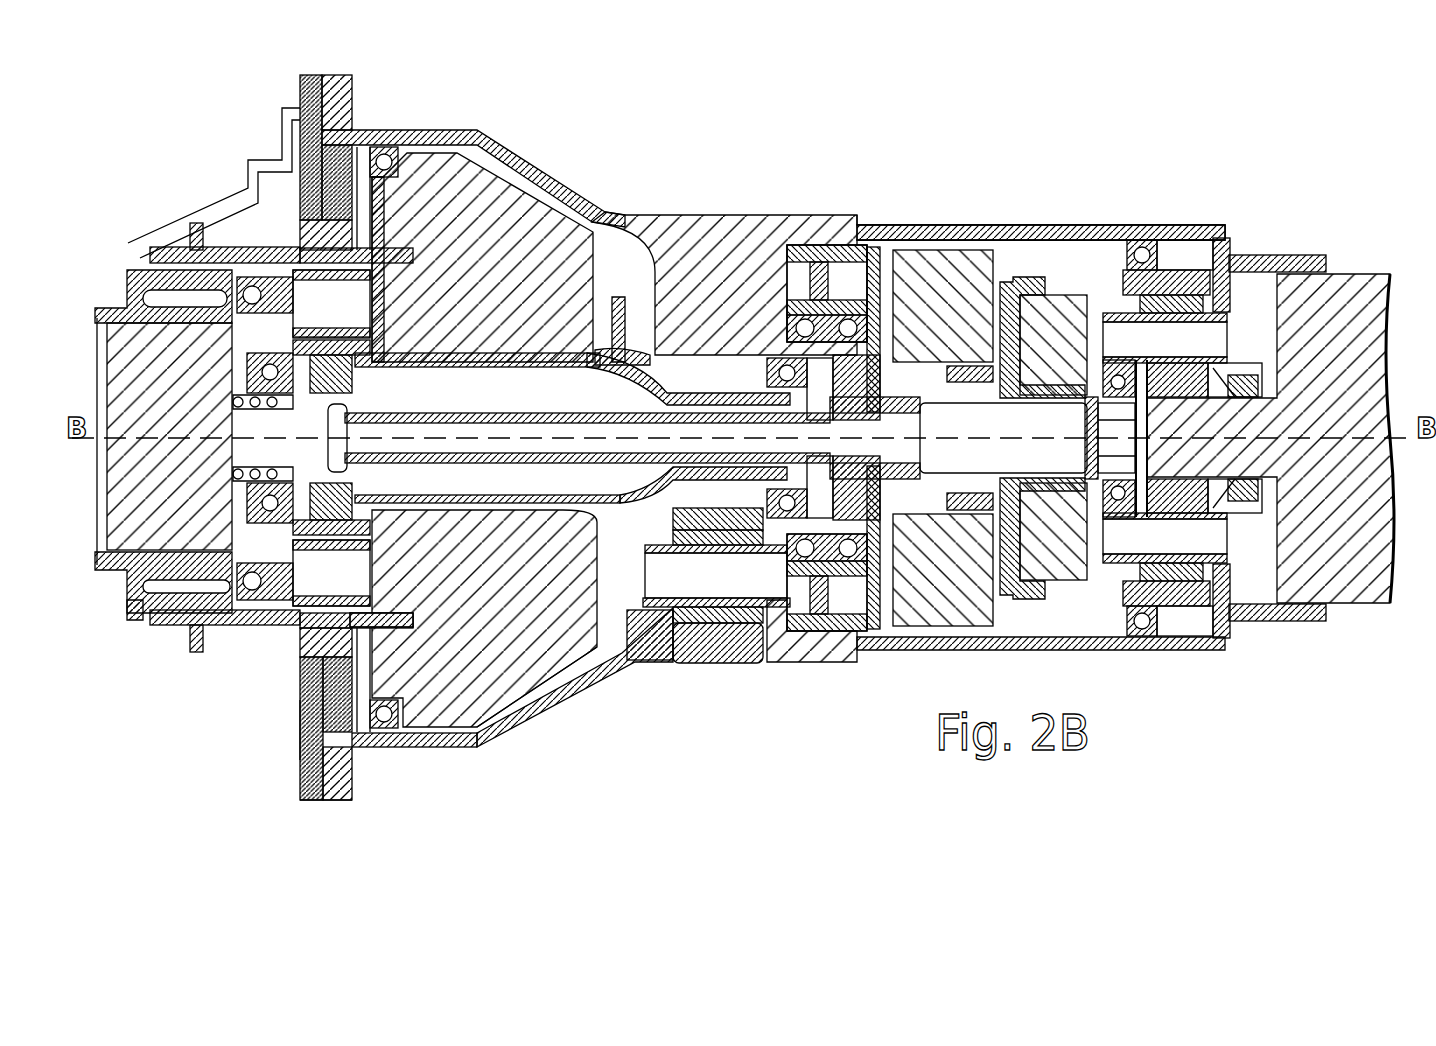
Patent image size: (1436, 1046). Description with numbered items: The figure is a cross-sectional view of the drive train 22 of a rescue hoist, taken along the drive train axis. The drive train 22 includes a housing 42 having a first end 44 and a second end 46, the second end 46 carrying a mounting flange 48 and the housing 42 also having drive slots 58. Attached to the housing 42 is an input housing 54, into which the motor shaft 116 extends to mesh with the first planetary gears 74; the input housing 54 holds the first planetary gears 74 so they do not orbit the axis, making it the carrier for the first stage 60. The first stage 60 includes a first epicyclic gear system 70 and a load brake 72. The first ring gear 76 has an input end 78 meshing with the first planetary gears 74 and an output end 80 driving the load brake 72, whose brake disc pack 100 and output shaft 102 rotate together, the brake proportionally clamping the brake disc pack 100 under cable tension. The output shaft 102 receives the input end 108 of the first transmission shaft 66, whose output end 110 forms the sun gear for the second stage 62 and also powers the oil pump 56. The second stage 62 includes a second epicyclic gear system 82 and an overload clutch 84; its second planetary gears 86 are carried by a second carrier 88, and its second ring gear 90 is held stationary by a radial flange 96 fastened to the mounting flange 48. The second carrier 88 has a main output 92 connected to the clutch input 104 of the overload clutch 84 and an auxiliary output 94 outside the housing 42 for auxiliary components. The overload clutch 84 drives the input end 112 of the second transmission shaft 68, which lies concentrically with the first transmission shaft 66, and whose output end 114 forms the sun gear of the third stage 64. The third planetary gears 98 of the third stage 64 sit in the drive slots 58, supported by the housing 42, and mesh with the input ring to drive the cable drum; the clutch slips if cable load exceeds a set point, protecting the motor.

The drive train 22 is at (933, 110).
The housing 42 is at (648, 215).
The first end 44 is at (1218, 225).
The second end 46 is at (375, 128).
The mounting flange 48 is at (340, 85).
The input housing 54 is at (1305, 255).
The oil pump 56 is at (100, 310).
The drive slots 58 is at (773, 648).
The first stage 60 is at (1040, 225).
The second stage 62 is at (418, 748).
The third stage 64 is at (677, 670).
The first transmission shaft 66 is at (697, 458).
The second transmission shaft 68 is at (607, 355).
The first epicyclic gear system 70 is at (1103, 280).
The load brake 72 is at (950, 245).
The first planetary gears 74 is at (1205, 300).
The first ring gear 76 is at (1063, 293).
The input end 78 is at (1160, 240).
The output end 80 is at (955, 505).
The second epicyclic gear system 82 is at (290, 226).
The overload clutch 84 is at (493, 177).
The second planetary gears 86 is at (307, 240).
The second carrier 88 is at (290, 607).
The second ring gear 90 is at (300, 723).
The main output 92 is at (376, 150).
The auxiliary output 94 is at (180, 624).
The radial flange 96 is at (310, 795).
The third planetary gears 98 is at (725, 655).
The brake disc pack 100 is at (903, 253).
The output shaft 102 is at (882, 482).
The clutch input 104 is at (378, 262).
The input end 108 is at (867, 447).
The output end 110 is at (323, 470).
The input end 112 is at (477, 493).
The output end 114 is at (707, 397).
The motor shaft 116 is at (1265, 445).